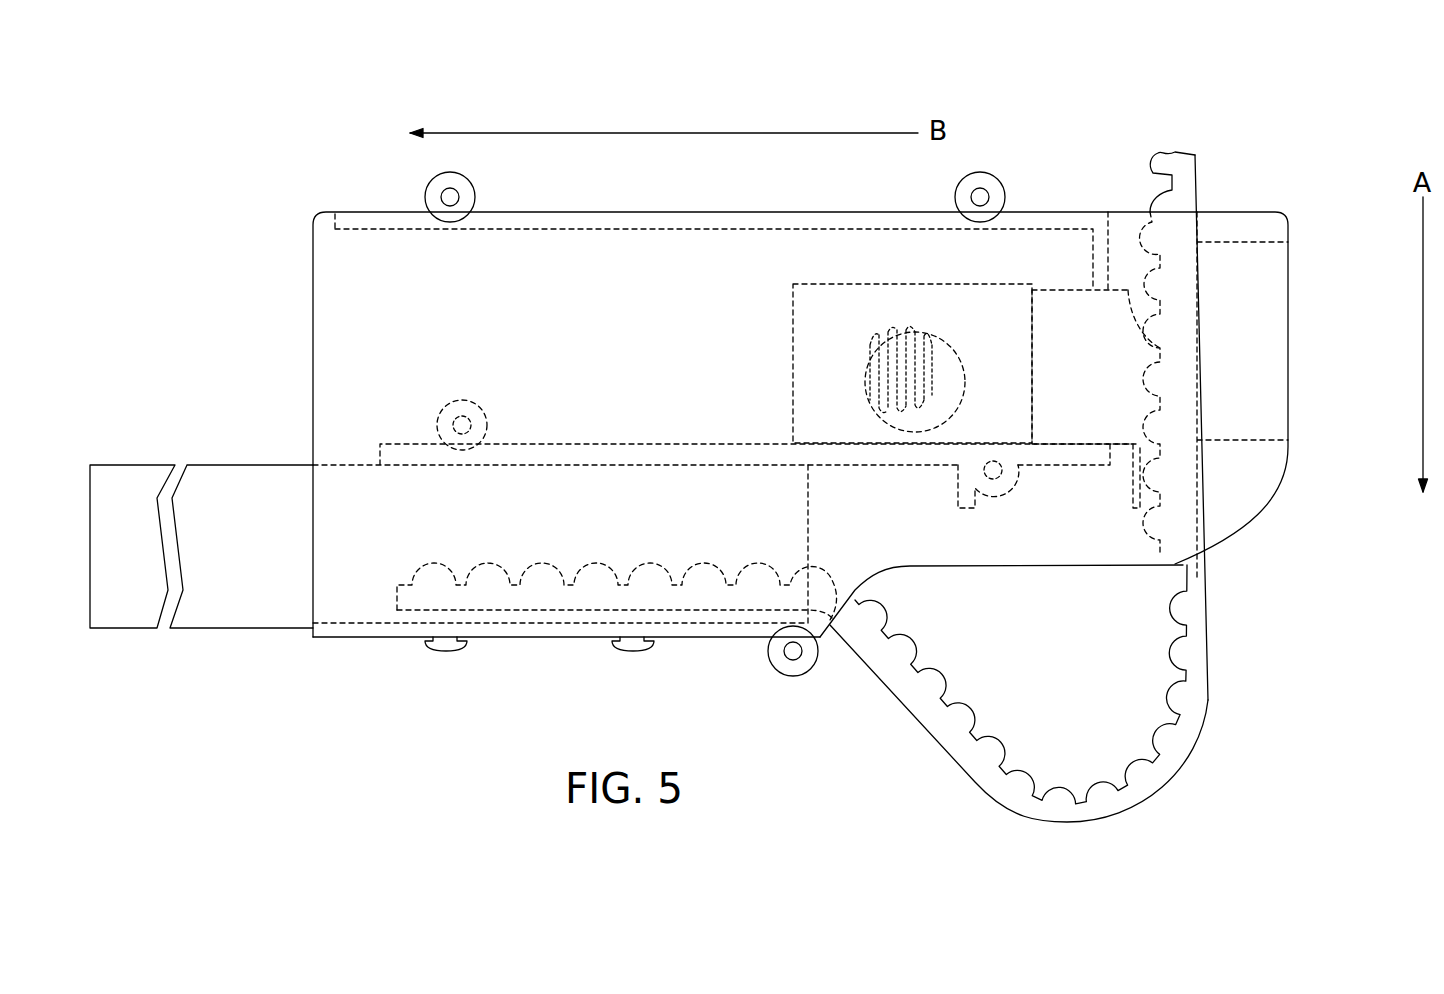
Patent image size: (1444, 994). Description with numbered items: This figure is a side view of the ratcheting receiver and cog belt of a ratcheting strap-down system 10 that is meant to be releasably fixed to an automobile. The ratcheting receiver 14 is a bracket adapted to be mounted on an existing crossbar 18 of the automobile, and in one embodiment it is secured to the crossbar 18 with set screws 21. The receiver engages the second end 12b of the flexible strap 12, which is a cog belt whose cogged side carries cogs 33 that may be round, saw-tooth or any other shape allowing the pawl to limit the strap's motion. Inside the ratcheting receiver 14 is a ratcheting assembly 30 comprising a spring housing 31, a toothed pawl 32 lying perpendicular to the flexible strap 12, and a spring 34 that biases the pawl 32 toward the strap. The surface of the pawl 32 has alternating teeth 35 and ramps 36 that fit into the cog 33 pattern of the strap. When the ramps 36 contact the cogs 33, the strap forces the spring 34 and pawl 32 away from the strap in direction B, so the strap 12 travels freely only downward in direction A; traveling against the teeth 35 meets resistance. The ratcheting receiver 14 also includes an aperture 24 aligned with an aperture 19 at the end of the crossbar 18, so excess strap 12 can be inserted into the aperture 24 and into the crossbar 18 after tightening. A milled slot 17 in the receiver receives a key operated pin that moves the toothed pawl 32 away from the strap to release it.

The ratcheting strap-down system 10 is at (932, 82).
The flexible strap 12 is at (1187, 188).
The second end of the flexible strap 12b is at (931, 756).
The ratcheting receiver 14 is at (1288, 232).
The milled slot 17 is at (953, 387).
The crossbar 18 is at (538, 463).
The aperture 19 is at (808, 557).
The set screws 21 is at (630, 652).
The aperture 24 is at (884, 581).
The ratcheting assembly 30 is at (767, 331).
The spring housing 31 is at (865, 284).
The toothed pawl 32 is at (1131, 290).
The cogs 33 is at (1172, 645).
The spring 34 is at (901, 332).
The teeth 35 is at (1165, 405).
The ramps 36 is at (1157, 380).